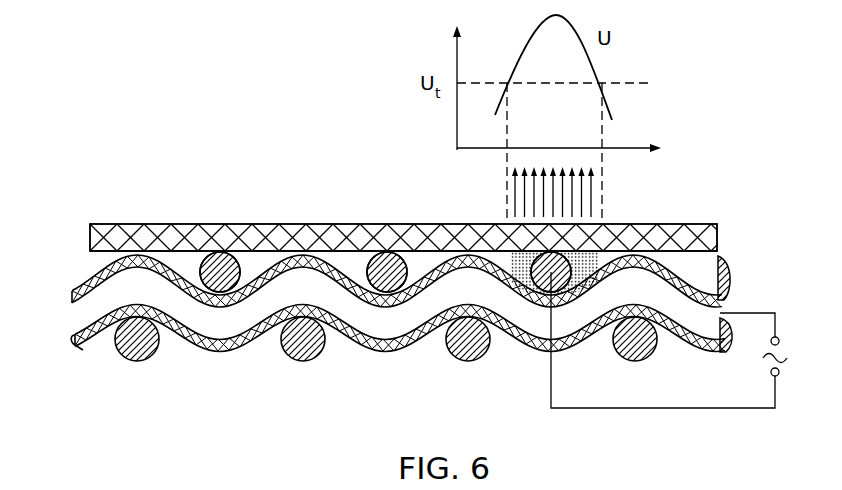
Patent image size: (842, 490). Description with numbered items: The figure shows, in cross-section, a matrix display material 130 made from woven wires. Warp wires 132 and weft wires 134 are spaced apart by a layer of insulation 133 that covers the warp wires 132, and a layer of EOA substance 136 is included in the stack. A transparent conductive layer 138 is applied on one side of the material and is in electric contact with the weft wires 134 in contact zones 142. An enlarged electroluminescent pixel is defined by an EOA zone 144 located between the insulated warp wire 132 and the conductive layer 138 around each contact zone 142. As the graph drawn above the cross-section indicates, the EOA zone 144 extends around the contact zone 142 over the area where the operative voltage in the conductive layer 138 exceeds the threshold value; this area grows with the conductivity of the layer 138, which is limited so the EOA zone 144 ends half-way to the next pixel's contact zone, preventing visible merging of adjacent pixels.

The matrix display material 130 is at (722, 178).
The warp wires 132 is at (84, 311).
The layer of insulation 133 is at (72, 293).
The weft wires 134 is at (212, 262).
The layer of EOA substance 136 is at (98, 260).
The transparent conductive layer 138 is at (128, 240).
The contact zones 142 is at (223, 252).
The EOA zone 144 is at (512, 256).